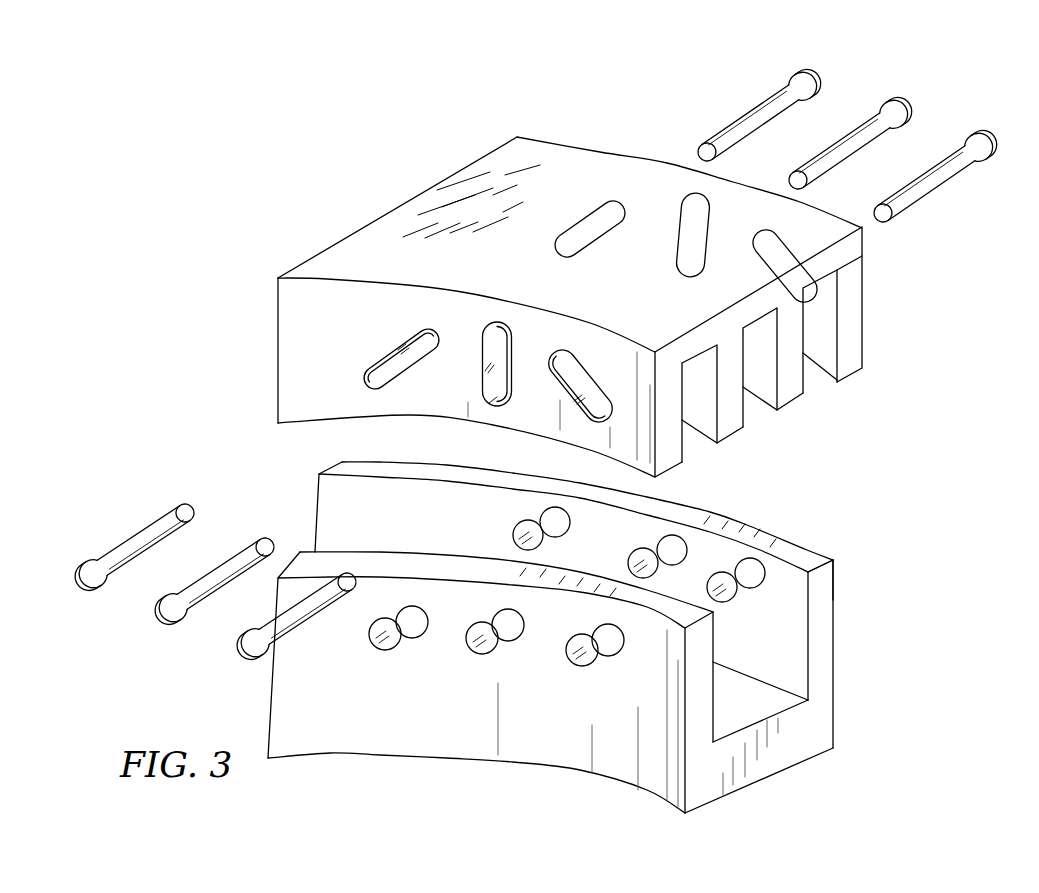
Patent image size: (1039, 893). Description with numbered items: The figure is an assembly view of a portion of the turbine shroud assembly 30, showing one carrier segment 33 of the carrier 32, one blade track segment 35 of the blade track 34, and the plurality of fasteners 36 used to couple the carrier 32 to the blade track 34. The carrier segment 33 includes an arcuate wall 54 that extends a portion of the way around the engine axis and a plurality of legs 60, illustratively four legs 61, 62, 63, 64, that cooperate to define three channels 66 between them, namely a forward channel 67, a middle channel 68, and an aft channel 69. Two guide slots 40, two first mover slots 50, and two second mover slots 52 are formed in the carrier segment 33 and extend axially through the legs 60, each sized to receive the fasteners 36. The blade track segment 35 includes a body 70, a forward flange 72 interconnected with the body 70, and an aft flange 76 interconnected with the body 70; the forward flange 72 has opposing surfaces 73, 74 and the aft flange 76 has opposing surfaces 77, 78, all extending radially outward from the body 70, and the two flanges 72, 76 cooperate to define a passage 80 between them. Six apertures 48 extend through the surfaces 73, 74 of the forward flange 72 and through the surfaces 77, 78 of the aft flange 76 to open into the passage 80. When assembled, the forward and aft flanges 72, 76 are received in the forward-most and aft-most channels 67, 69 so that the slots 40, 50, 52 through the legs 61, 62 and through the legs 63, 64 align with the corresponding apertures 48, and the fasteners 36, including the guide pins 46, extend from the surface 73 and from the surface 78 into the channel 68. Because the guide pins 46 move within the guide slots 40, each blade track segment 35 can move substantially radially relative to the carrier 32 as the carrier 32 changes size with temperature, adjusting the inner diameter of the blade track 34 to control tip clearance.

The turbine shroud assembly 30 is at (708, 90).
The carrier 32 is at (507, 61).
The carrier segment 33 is at (518, 133).
The blade track 34 is at (913, 523).
The blade track segment 35 is at (842, 563).
The fasteners 36 is at (817, 60).
The guide slots 40 is at (502, 319).
The guide pins 46 is at (782, 178).
The apertures 48 is at (408, 603).
The first mover slots 50 is at (592, 366).
The second mover slots 52 is at (420, 326).
The arcuate wall 54 is at (608, 160).
The legs 60 is at (872, 272).
The first leg 61 is at (672, 370).
The second leg 62 is at (728, 350).
The third leg 63 is at (790, 327).
The fourth leg 64 is at (847, 287).
The channels 66 is at (813, 321).
The forward channel 67 is at (708, 403).
The middle channel 68 is at (768, 373).
The aft channel 69 is at (830, 349).
The body 70 is at (765, 758).
The forward flange 72 is at (700, 667).
The forward flange surface 73 is at (660, 652).
The forward flange surface 74 is at (715, 640).
The aft flange 76 is at (822, 593).
The aft flange surface 77 is at (770, 604).
The aft flange surface 78 is at (835, 663).
The passage 80 is at (408, 507).